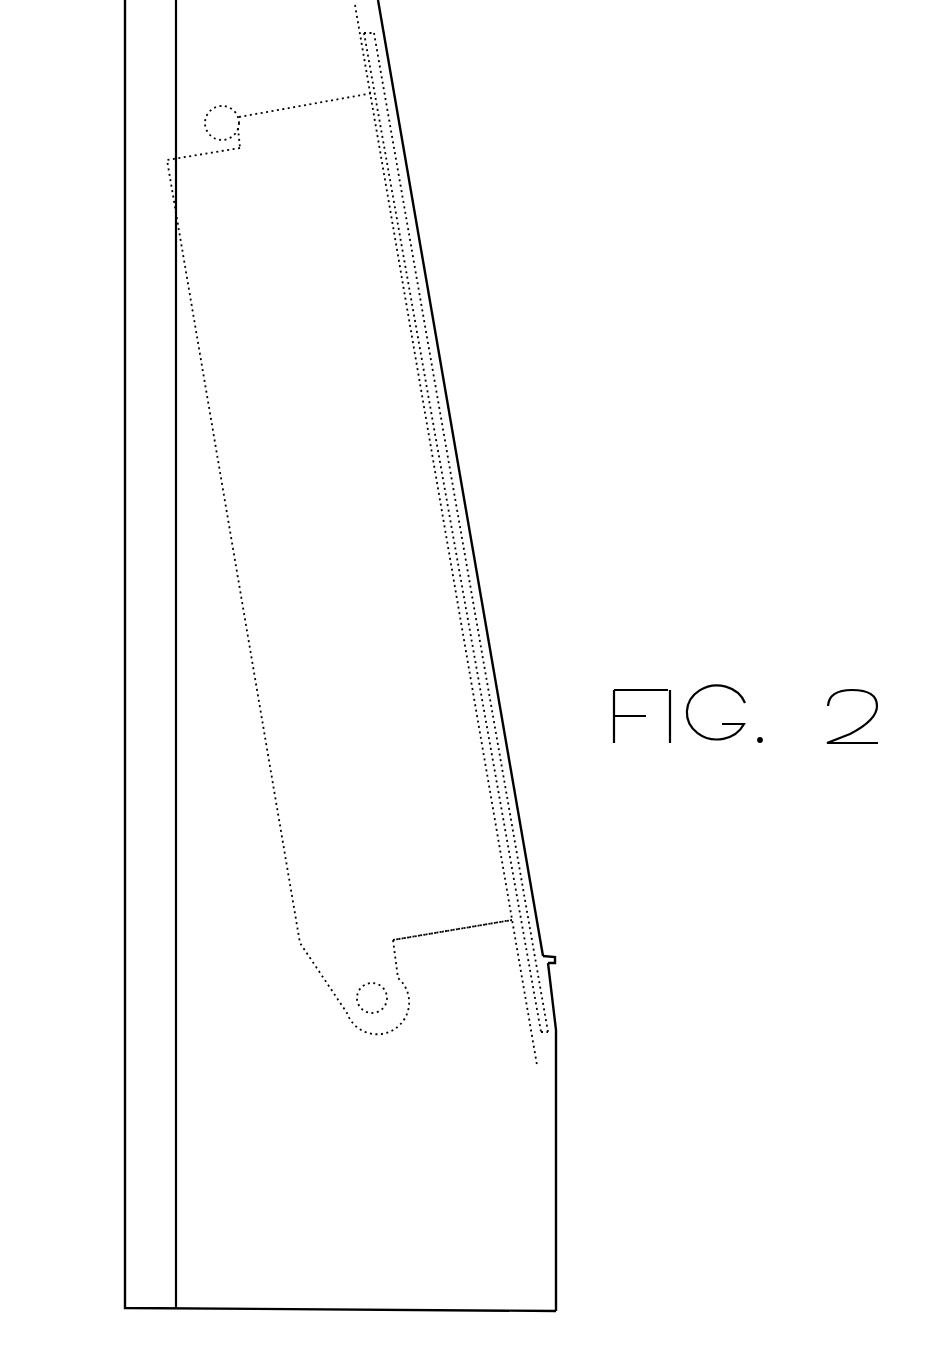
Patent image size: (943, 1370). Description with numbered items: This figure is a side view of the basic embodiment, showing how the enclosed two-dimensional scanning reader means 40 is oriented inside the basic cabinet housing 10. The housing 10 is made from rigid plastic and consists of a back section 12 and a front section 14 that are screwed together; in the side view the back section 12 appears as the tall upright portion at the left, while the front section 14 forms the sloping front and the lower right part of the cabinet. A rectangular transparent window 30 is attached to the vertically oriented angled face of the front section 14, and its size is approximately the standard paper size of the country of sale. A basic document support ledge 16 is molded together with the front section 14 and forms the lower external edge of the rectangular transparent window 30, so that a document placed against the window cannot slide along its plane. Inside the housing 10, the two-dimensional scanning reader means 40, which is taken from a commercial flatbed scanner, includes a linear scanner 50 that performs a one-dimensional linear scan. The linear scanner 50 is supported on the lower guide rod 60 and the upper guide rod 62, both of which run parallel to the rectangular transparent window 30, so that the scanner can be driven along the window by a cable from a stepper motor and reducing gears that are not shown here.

The basic cabinet housing 10 is at (607, 1252).
The back section 12 is at (133, 723).
The front section 14 is at (556, 1122).
The basic document support ledge 16 is at (556, 962).
The rectangular transparent window 30 is at (465, 558).
The two-dimensional scanning reader means 40 is at (383, 1052).
The linear scanner 50 is at (442, 947).
The lower guide rod 60 is at (370, 983).
The upper guide rod 62 is at (228, 107).